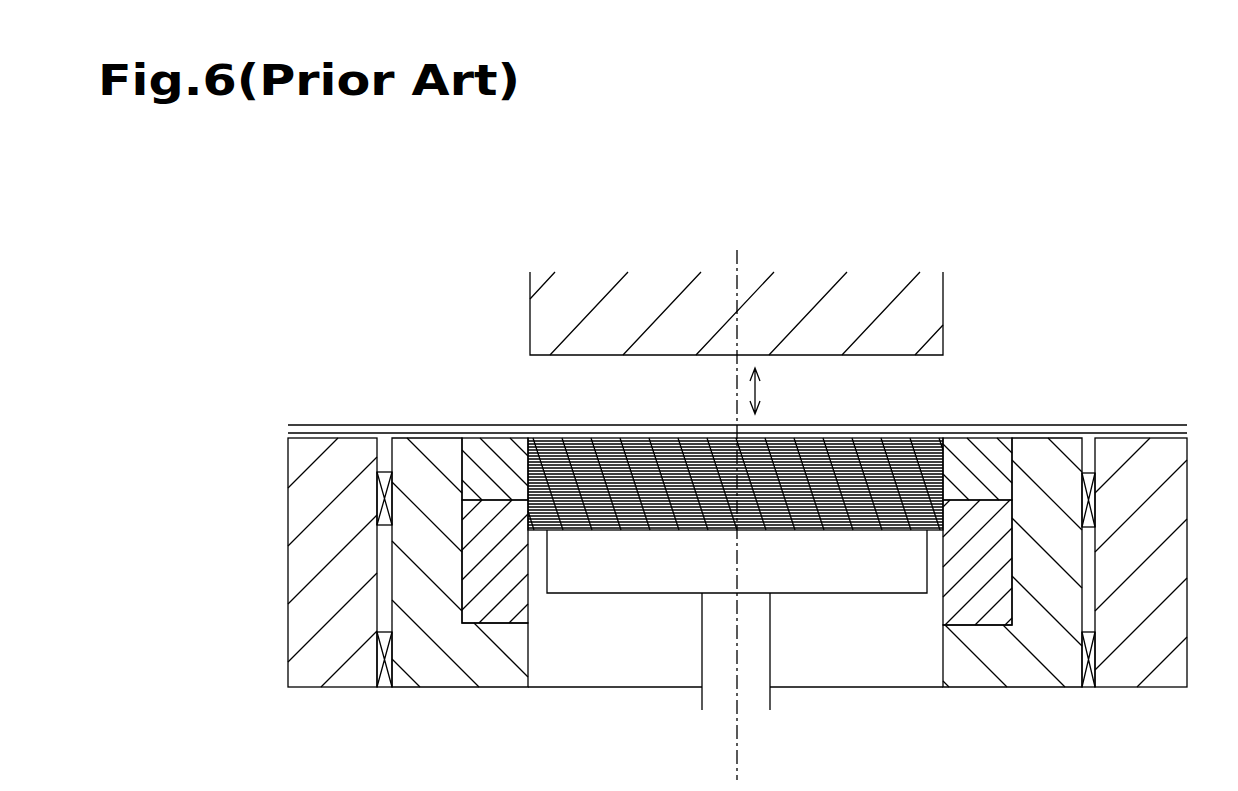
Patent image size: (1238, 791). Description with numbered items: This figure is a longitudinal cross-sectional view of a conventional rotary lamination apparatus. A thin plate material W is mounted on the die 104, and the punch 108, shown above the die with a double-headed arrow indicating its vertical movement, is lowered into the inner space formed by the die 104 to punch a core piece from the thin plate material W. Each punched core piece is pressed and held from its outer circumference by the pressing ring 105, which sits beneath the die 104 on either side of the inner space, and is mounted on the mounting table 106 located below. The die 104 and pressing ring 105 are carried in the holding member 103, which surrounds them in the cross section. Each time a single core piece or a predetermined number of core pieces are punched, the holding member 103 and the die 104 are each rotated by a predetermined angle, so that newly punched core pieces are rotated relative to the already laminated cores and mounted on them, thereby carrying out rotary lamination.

The holding member 103 is at (443, 682).
The die 104 is at (478, 445).
The pressing ring 105 is at (505, 625).
The mounting table 106 is at (566, 587).
The punch 108 is at (943, 311).
The thin plate material W is at (400, 425).